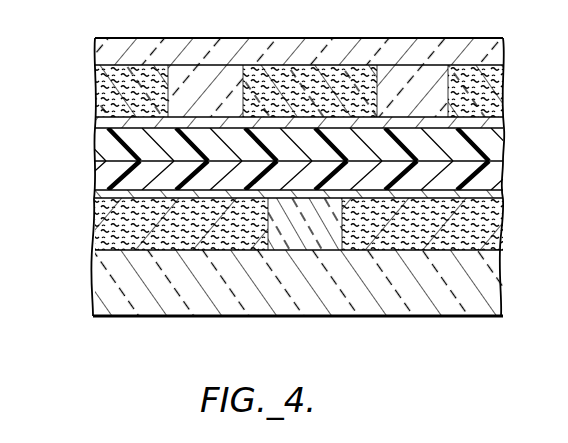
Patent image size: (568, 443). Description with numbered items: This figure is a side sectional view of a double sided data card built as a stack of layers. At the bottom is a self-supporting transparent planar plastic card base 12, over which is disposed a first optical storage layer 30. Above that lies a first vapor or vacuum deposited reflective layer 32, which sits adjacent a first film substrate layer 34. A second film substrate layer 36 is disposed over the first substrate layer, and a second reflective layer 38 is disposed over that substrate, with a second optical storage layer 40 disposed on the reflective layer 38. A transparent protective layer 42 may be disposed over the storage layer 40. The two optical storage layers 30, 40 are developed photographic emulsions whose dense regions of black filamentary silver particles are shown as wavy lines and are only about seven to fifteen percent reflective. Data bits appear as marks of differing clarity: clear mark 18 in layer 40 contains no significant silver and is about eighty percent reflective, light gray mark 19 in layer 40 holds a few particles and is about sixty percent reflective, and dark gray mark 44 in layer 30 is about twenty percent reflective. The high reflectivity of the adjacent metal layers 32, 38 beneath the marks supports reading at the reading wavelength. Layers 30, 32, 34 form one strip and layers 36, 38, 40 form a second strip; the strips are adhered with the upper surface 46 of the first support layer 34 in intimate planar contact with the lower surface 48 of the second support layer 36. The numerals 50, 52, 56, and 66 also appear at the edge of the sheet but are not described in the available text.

The card base 12 is at (107, 273).
The clear mark 18 is at (195, 78).
The light gray mark 19 is at (388, 80).
The first optical storage layer 30 is at (97, 231).
The first reflective layer 32 is at (97, 195).
The first film substrate layer 34 is at (110, 172).
The second film substrate layer 36 is at (98, 149).
The second reflective layer 38 is at (98, 118).
The second optical storage layer 40 is at (97, 96).
The transparent protective layer 42 is at (97, 44).
The dark gray mark 44 is at (292, 203).
The upper surface of first support layer 46 is at (500, 172).
The lower surface of second support layer 48 is at (500, 132).
The element 50 is at (554, 308).
The element 52 is at (554, 232).
The element 56 is at (554, 255).
The element 66 is at (554, 283).